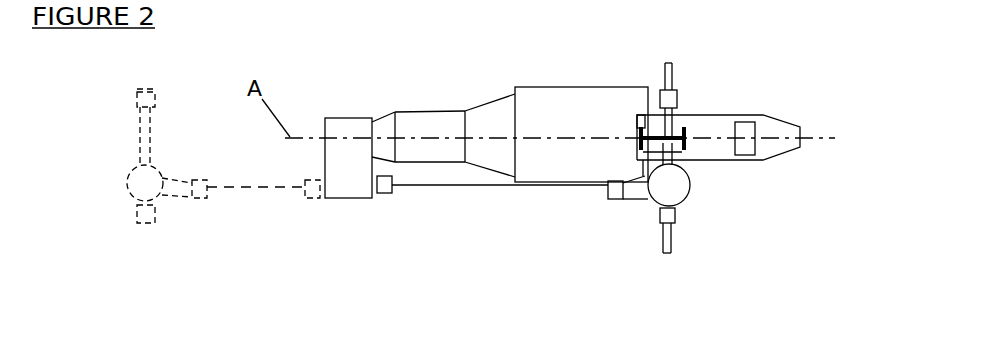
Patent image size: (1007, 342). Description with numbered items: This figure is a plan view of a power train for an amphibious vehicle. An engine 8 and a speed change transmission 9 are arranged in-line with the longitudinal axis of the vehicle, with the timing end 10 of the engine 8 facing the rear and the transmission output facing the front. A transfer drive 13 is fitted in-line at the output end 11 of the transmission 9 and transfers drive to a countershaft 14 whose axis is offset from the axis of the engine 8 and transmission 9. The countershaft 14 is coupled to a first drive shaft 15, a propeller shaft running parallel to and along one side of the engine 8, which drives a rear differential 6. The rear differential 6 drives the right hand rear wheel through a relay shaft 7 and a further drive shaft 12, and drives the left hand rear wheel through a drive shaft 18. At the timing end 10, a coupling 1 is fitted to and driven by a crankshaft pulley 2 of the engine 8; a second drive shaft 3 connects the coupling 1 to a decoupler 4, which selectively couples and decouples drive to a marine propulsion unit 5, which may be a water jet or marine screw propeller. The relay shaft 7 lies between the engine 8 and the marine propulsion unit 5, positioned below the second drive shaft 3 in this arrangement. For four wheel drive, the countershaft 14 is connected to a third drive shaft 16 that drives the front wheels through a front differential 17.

The coupling 1 is at (638, 133).
The crankshaft pulley 2 is at (640, 153).
The second drive shaft 3 is at (686, 150).
The decoupler 4 is at (684, 128).
The marine propulsion unit 5 is at (780, 127).
The rear differential 6 is at (670, 187).
The relay shaft 7 is at (677, 112).
The engine 8 is at (542, 127).
The speed change transmission 9 is at (437, 137).
The timing end 10 is at (645, 117).
The output end 11 is at (375, 118).
The further drive shaft 12 is at (671, 107).
The transfer drive 13 is at (360, 174).
The countershaft 14 is at (347, 198).
The first drive shaft 15 is at (460, 185).
The third drive shaft 16 is at (243, 188).
The front differential 17 is at (157, 194).
The drive shaft 18 is at (676, 238).